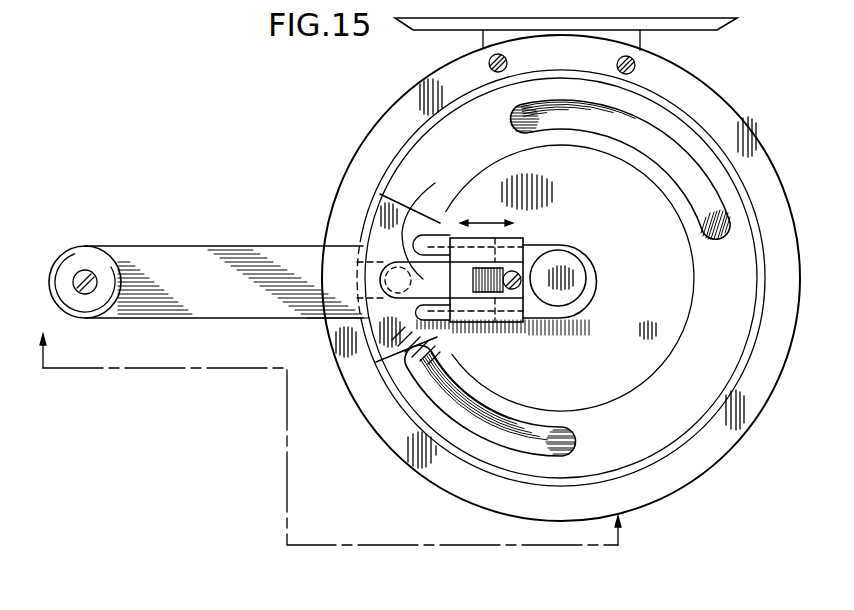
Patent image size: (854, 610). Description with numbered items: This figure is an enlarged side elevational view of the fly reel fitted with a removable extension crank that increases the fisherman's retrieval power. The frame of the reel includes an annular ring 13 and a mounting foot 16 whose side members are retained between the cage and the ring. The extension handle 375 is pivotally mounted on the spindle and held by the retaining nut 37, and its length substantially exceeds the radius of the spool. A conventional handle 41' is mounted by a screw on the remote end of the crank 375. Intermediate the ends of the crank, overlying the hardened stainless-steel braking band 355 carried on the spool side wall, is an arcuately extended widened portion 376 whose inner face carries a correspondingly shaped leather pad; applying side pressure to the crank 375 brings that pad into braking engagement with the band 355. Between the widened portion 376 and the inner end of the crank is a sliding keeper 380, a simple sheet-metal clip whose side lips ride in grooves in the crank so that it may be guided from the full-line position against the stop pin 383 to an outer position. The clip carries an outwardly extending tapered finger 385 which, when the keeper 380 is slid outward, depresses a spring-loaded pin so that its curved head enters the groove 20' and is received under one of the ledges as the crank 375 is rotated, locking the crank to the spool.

The annular ring 13 is at (704, 456).
The groove 20' is at (570, 269).
The annular band 355 is at (730, 363).
The extension handle 375 is at (248, 302).
The handle 41' is at (107, 262).
The widened portion 376 is at (378, 236).
The finger 385 is at (435, 192).
The retaining nut 37 is at (583, 278).
The sliding keeper 380 is at (513, 312).
The stop pin 383 is at (518, 281).
The mounting foot 16 is at (334, 453).